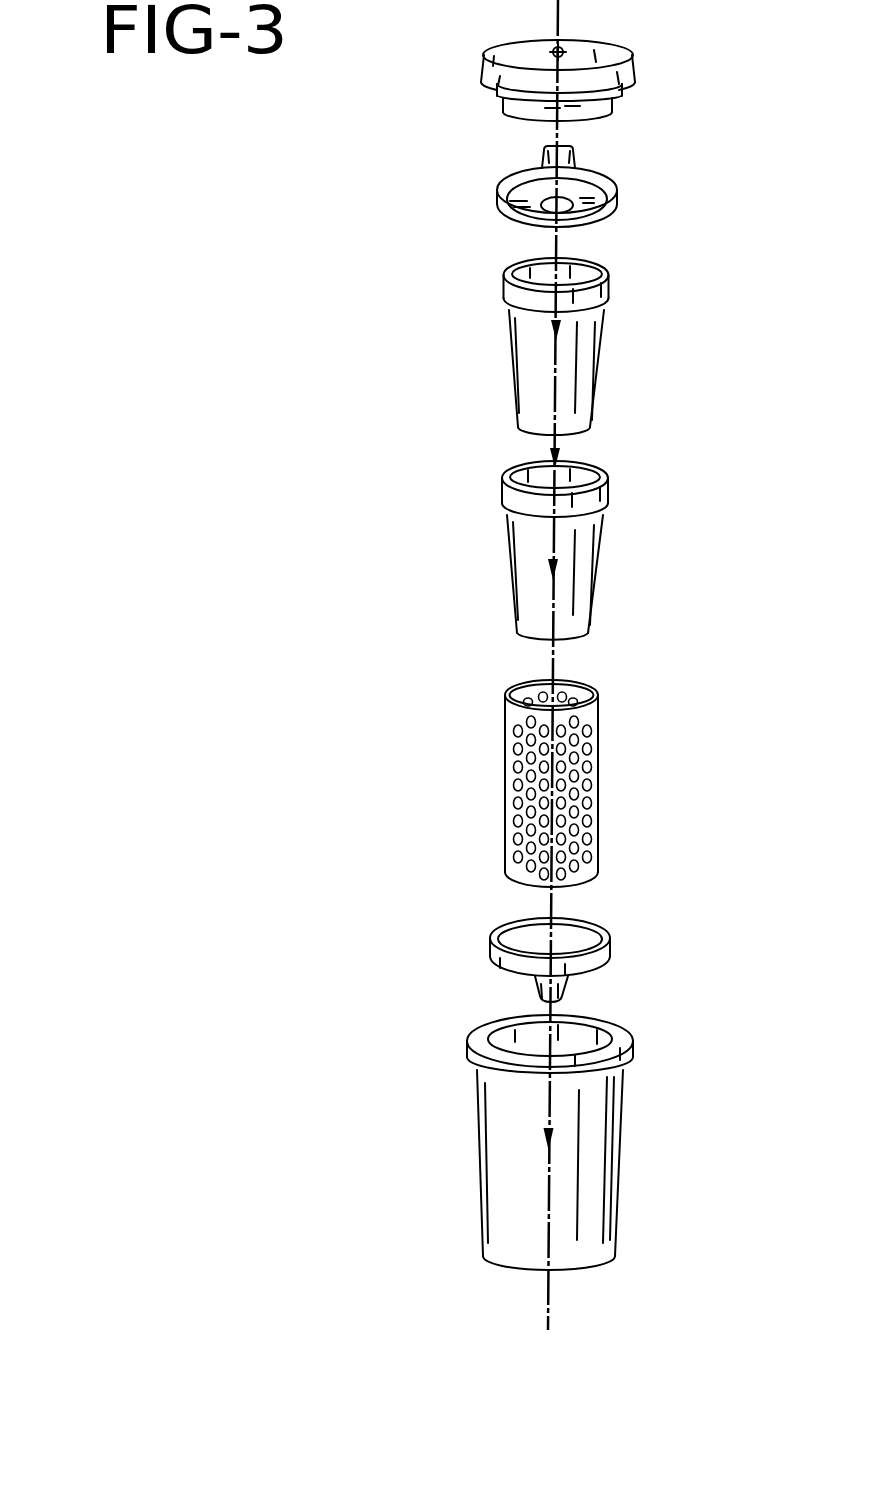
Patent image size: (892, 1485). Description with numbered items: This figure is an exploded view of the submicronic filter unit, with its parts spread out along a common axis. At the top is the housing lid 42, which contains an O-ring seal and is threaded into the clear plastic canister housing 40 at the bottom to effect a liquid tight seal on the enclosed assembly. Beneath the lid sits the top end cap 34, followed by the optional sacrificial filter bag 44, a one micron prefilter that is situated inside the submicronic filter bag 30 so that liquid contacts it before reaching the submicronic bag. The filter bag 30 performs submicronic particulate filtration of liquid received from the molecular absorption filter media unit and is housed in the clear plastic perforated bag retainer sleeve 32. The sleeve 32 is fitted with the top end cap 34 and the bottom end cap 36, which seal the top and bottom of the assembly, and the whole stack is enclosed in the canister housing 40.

The housing lid 42 is at (630, 60).
The top end cap 34 is at (617, 192).
The sacrificial filter bag 44 is at (600, 355).
The filter bag 30 is at (598, 565).
The perforated bag retainer sleeve 32 is at (597, 783).
The bottom end cap 36 is at (610, 950).
The canister housing 40 is at (618, 1158).